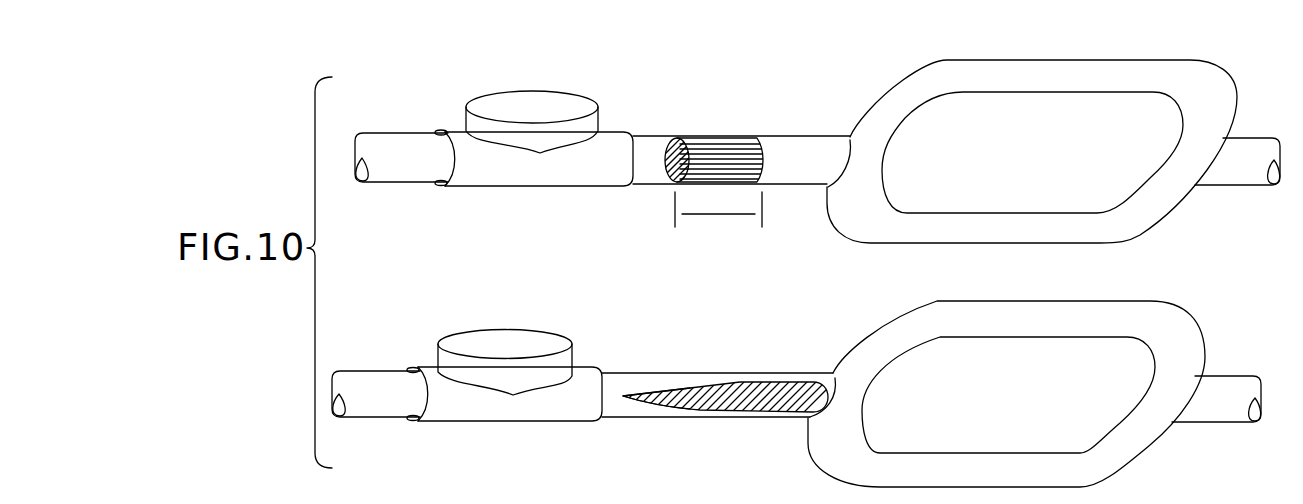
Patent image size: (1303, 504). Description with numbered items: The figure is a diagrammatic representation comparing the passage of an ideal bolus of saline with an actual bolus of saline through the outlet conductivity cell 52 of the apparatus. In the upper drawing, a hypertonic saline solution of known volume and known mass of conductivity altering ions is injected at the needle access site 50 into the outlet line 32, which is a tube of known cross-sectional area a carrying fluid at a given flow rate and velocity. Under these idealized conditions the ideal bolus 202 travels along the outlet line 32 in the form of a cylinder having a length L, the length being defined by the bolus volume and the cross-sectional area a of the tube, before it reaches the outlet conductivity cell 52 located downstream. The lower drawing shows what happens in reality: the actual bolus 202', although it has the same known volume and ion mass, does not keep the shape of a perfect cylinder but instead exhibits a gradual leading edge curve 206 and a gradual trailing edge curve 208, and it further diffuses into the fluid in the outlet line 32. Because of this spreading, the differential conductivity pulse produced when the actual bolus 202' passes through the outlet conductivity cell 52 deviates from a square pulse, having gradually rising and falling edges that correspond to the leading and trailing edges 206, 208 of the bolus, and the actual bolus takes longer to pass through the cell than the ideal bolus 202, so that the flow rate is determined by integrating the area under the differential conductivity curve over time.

The needle access site 50 is at (560, 107).
The outlet conductivity cell 52 is at (1173, 58).
The outlet line 32 is at (794, 136).
The ideal bolus 202 is at (693, 137).
The cross-sectional area a is at (676, 139).
The length L is at (718, 217).
The actual bolus 202' is at (711, 375).
The trailing edge curve 208 is at (670, 387).
The leading edge curve 206 is at (829, 380).